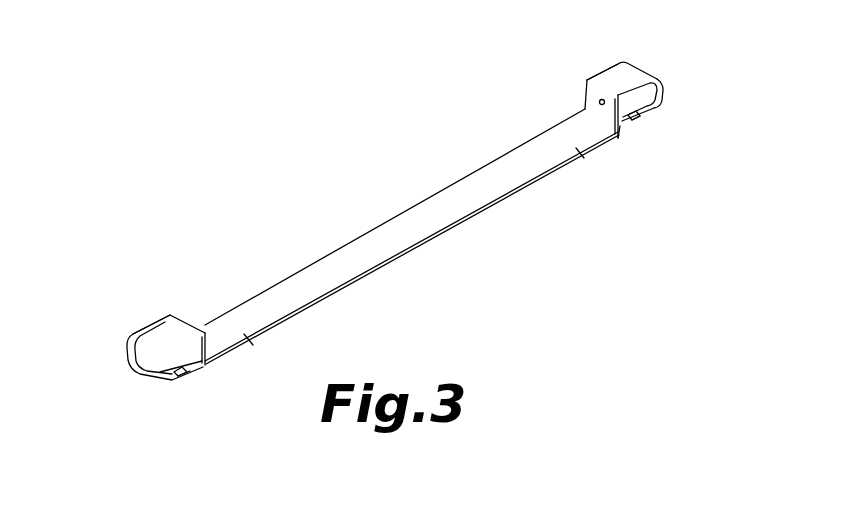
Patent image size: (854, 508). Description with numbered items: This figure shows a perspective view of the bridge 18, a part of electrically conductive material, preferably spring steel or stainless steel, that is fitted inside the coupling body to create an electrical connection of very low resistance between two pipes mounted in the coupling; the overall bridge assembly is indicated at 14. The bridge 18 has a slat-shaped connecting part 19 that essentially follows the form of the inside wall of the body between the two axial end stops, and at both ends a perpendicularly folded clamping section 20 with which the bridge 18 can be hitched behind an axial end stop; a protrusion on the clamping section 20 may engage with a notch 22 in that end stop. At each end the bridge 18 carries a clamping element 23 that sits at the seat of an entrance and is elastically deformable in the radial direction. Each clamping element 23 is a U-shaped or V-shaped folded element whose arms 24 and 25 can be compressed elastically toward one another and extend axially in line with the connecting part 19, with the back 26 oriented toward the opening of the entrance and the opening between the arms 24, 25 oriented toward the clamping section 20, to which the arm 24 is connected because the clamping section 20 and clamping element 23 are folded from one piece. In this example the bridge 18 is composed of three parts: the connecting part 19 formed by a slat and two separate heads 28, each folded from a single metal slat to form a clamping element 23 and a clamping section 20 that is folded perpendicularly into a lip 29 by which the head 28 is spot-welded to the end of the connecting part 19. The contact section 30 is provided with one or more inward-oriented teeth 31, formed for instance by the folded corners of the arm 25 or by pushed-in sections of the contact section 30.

The link assembly 14 is at (672, 54).
The bridge 18 is at (402, 250).
The connecting part 19 is at (345, 273).
The clamping section 20 is at (207, 363).
The notch 22 is at (599, 101).
The clamping element 23 is at (401, 222).
The arm 24 is at (158, 340).
The arm 25 is at (180, 378).
The back 26 is at (148, 353).
The head 28 is at (134, 302).
The lip 29 is at (249, 340).
The contact section 30 is at (175, 369).
The tooth 31 is at (183, 372).